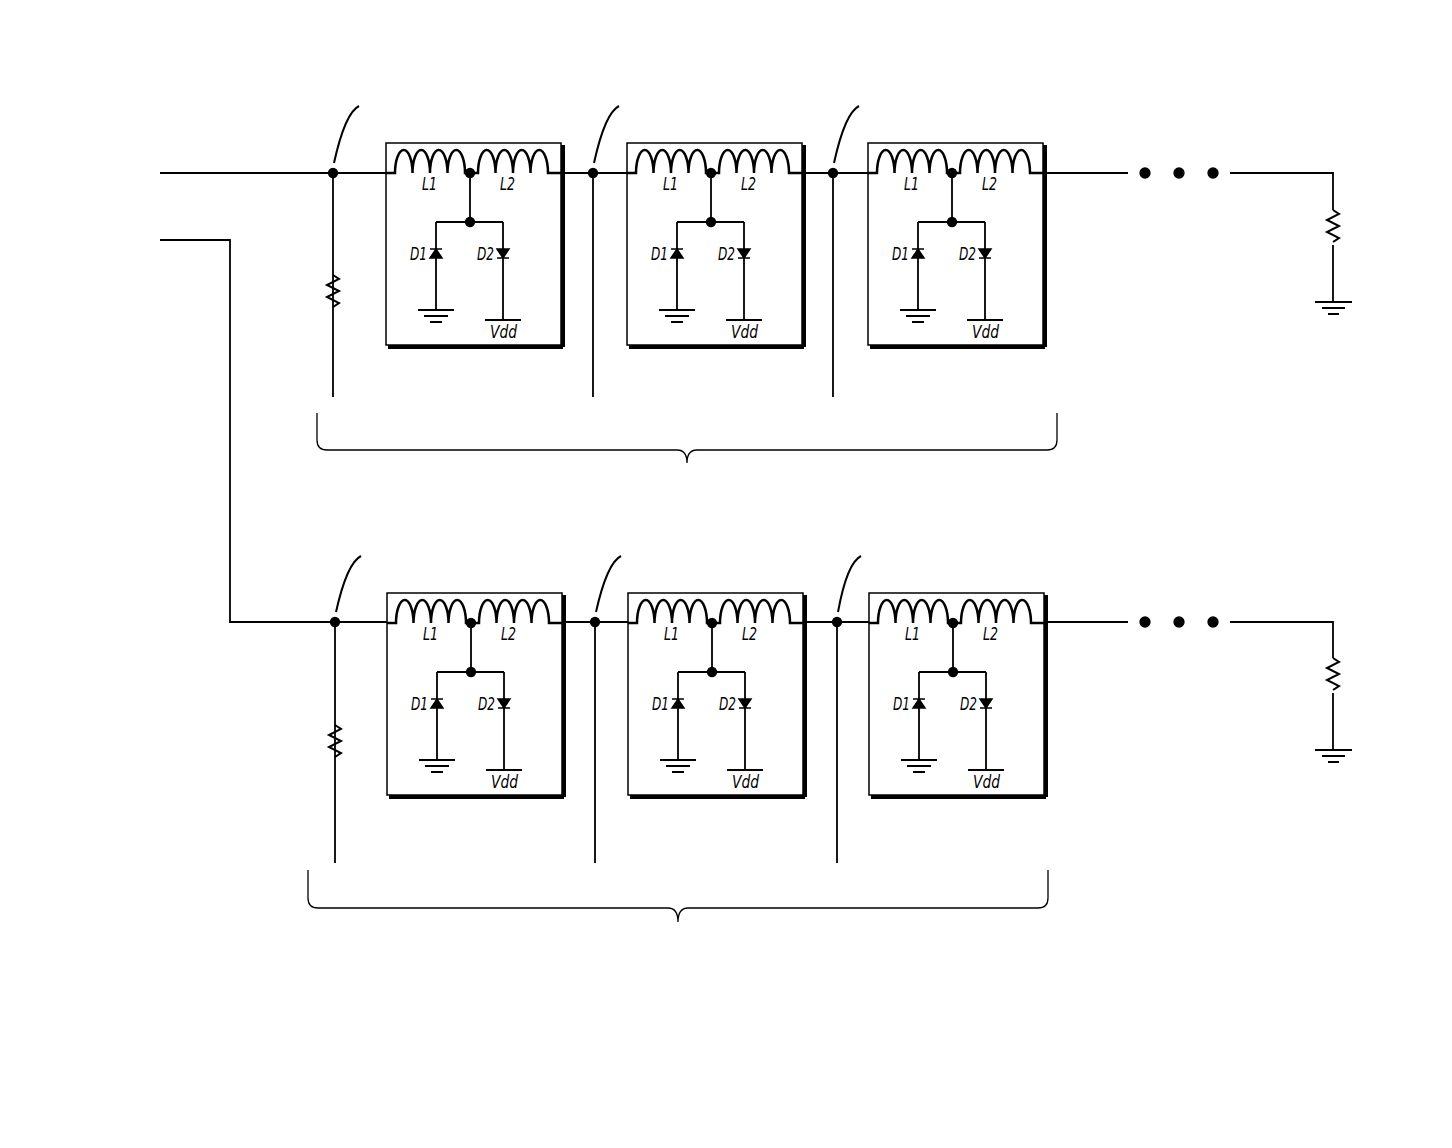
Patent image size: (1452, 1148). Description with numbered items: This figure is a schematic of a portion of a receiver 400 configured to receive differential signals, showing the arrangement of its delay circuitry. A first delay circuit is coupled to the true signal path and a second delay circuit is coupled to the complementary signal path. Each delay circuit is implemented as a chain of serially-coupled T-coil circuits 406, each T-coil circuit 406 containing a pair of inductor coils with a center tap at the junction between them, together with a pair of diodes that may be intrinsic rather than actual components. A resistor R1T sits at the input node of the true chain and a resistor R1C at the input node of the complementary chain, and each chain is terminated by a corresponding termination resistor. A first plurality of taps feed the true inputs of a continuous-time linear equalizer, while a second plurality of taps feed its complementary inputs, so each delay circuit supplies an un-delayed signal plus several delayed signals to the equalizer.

The receiver 400 is at (1075, 95).
The T-coil circuit 406 is at (955, 593).
The element R1T is at (315, 291).
The element R1C is at (316, 741).